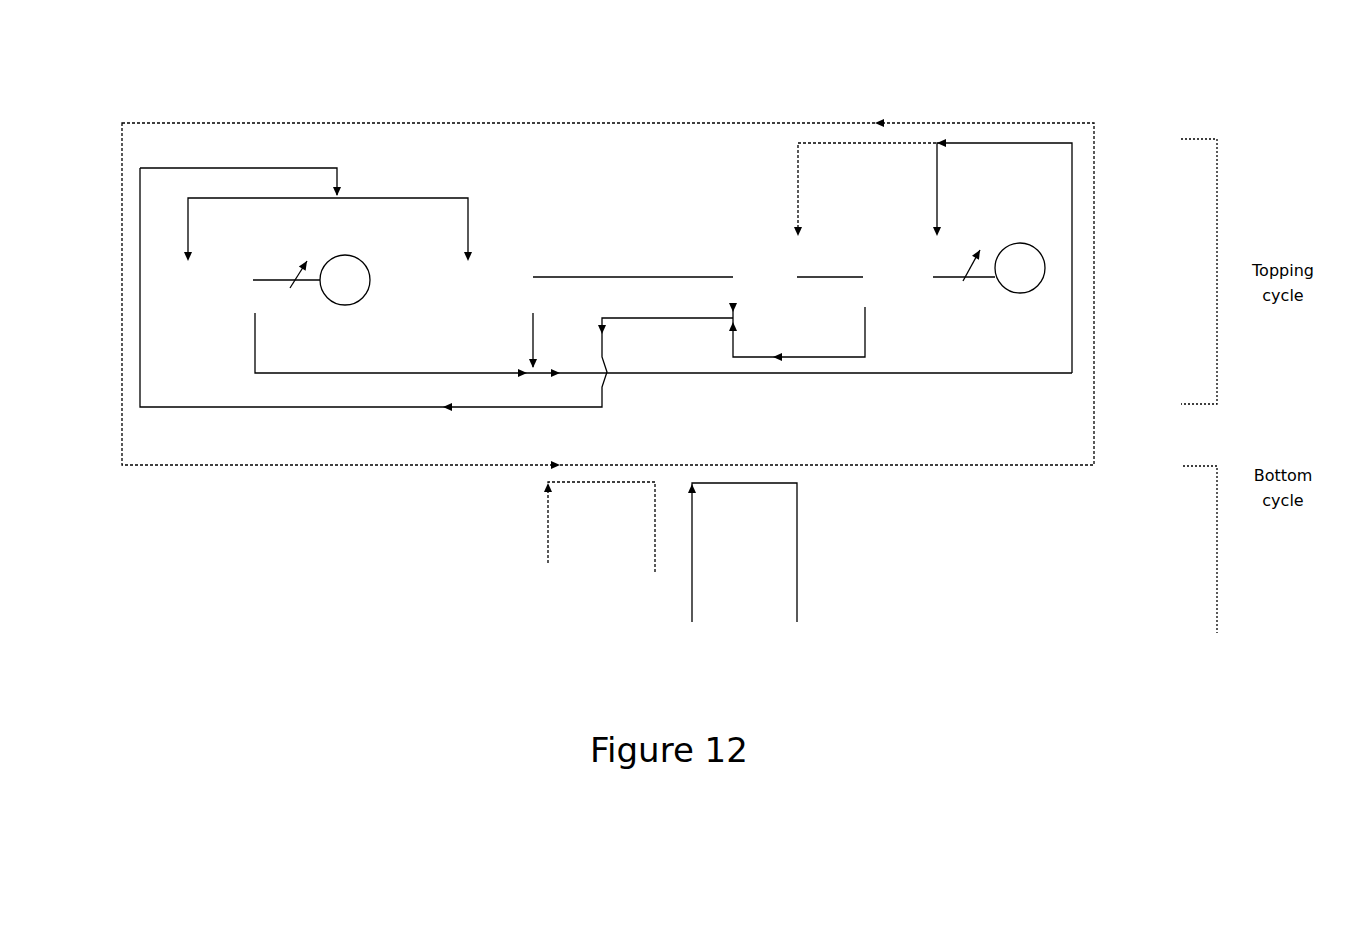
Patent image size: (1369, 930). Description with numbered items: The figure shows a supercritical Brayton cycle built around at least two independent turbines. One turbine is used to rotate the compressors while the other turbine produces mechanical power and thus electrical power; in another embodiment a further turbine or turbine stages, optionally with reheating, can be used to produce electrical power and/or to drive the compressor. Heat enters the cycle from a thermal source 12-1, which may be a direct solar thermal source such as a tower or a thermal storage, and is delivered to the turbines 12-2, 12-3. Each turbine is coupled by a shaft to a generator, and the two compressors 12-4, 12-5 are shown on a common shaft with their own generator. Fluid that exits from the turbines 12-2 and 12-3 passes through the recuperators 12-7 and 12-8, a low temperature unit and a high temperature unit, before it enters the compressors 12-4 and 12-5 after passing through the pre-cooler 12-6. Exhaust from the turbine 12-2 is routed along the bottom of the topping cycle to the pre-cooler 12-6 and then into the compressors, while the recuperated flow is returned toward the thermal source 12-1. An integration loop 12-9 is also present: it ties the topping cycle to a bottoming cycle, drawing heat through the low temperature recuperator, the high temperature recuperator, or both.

The thermal source 12-1 is at (327, 112).
The turbine 12-2 is at (328, 251).
The turbine 12-3 is at (611, 283).
The compressor C2 12-4 is at (833, 252).
The compressor C3 12-5 is at (951, 256).
The pre-cooler 12-6 is at (1002, 256).
The low temperature recuperator (LTR) 12-7 is at (436, 307).
The high temperature recuperator 12-8 is at (766, 512).
The integration loop 12-9 is at (789, 587).